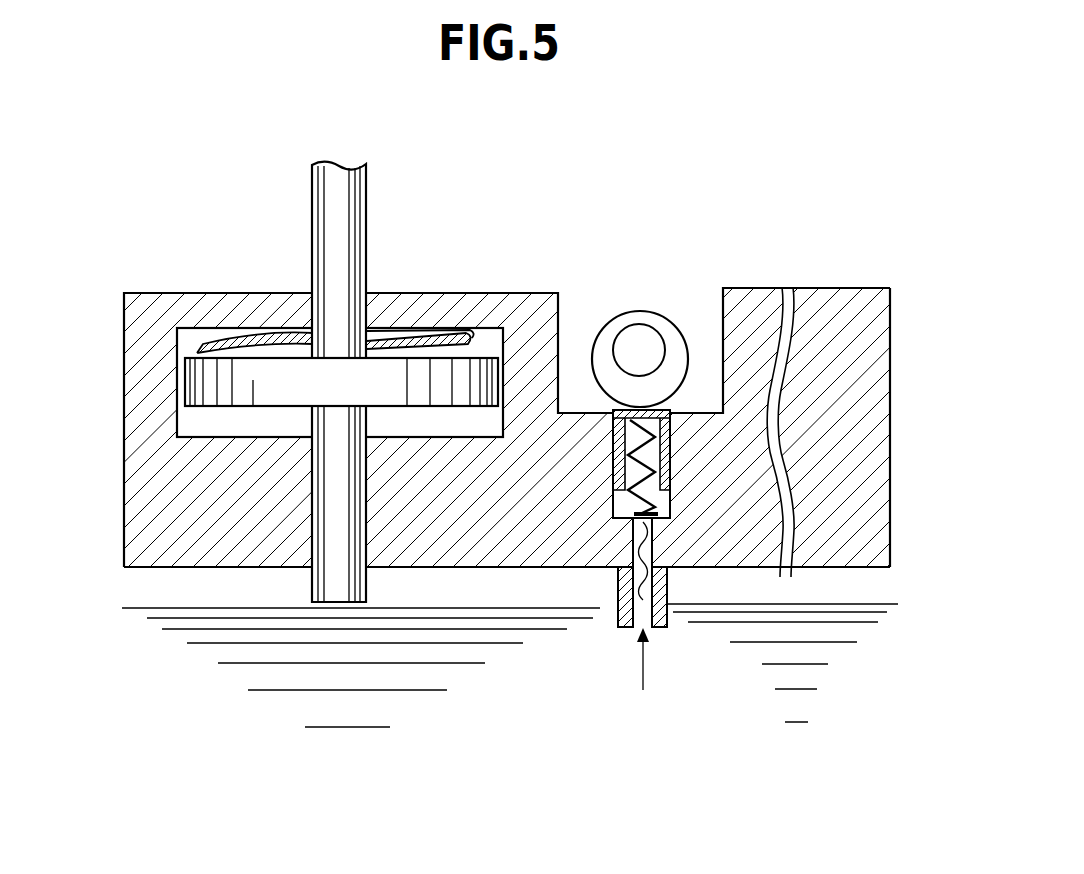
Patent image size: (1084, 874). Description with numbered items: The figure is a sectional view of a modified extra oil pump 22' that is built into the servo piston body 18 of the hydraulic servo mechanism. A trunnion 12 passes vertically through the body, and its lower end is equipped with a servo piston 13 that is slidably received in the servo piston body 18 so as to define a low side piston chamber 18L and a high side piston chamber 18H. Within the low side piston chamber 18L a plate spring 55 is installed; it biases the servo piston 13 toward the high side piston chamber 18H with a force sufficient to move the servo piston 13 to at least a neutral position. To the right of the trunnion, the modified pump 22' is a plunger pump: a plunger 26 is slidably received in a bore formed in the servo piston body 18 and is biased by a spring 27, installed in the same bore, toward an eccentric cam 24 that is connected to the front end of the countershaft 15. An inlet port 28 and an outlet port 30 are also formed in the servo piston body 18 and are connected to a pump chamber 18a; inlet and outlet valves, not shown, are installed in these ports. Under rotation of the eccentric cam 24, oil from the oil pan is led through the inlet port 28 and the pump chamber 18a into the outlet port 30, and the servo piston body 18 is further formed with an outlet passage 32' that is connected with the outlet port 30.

The trunnion 12 is at (350, 200).
The servo piston 13 is at (210, 382).
The countershaft 15 is at (643, 335).
The servo piston body 18 is at (177, 503).
The low side piston chamber 18L is at (190, 338).
The high side piston chamber 18H is at (205, 425).
The pump chamber 18a is at (612, 518).
The modified extra oil pump 22' is at (812, 363).
The eccentric cam 24 is at (672, 374).
The plunger 26 is at (661, 459).
The spring 27 is at (657, 498).
The inlet port 28 is at (662, 598).
The outlet port 30 is at (655, 535).
The outlet passage 32' is at (605, 593).
The plate spring 55 is at (243, 332).